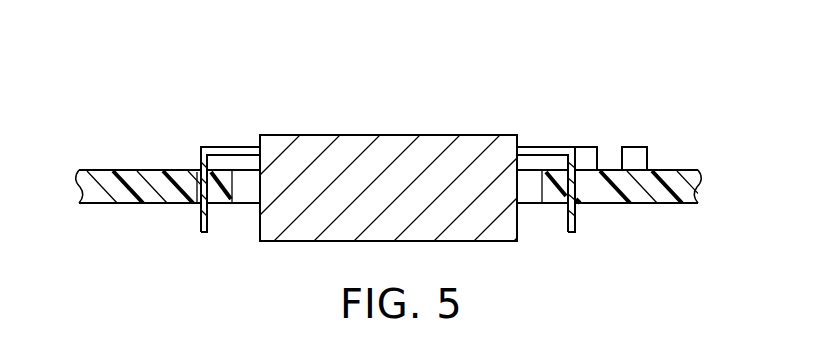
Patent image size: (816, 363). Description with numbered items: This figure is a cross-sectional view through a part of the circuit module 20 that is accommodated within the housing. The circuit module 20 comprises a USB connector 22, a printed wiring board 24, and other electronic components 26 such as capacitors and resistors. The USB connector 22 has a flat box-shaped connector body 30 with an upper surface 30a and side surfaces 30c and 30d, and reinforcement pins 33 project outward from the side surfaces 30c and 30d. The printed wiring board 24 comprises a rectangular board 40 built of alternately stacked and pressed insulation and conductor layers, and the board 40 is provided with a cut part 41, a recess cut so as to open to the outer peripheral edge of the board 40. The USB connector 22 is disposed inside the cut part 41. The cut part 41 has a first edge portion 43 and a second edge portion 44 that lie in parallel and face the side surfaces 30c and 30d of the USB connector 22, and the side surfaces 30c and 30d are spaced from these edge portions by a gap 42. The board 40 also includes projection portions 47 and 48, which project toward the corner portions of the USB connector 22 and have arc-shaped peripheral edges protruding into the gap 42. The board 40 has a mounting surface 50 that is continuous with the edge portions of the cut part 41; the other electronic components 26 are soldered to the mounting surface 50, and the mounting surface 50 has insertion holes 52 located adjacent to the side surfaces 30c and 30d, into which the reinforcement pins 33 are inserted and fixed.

The circuit module 20 is at (91, 119).
The USB connector 22 is at (398, 127).
The printed wiring board 24 is at (683, 213).
The other electronic components 26 is at (636, 147).
The connector body 30 is at (464, 134).
The upper surface 30a is at (322, 134).
The side surface 30c is at (522, 242).
The side surface 30d is at (257, 242).
The reinforcement pins 33 is at (214, 147).
The board 40 is at (126, 204).
The cut part 41 is at (243, 196).
The gap 42 is at (526, 165).
The first edge portion 43 is at (546, 204).
The second edge portion 44 is at (239, 176).
The projection portion 47 is at (545, 180).
The projection portion 48 is at (248, 178).
The mounting surface 50 is at (681, 171).
The insertion holes 52 is at (194, 183).